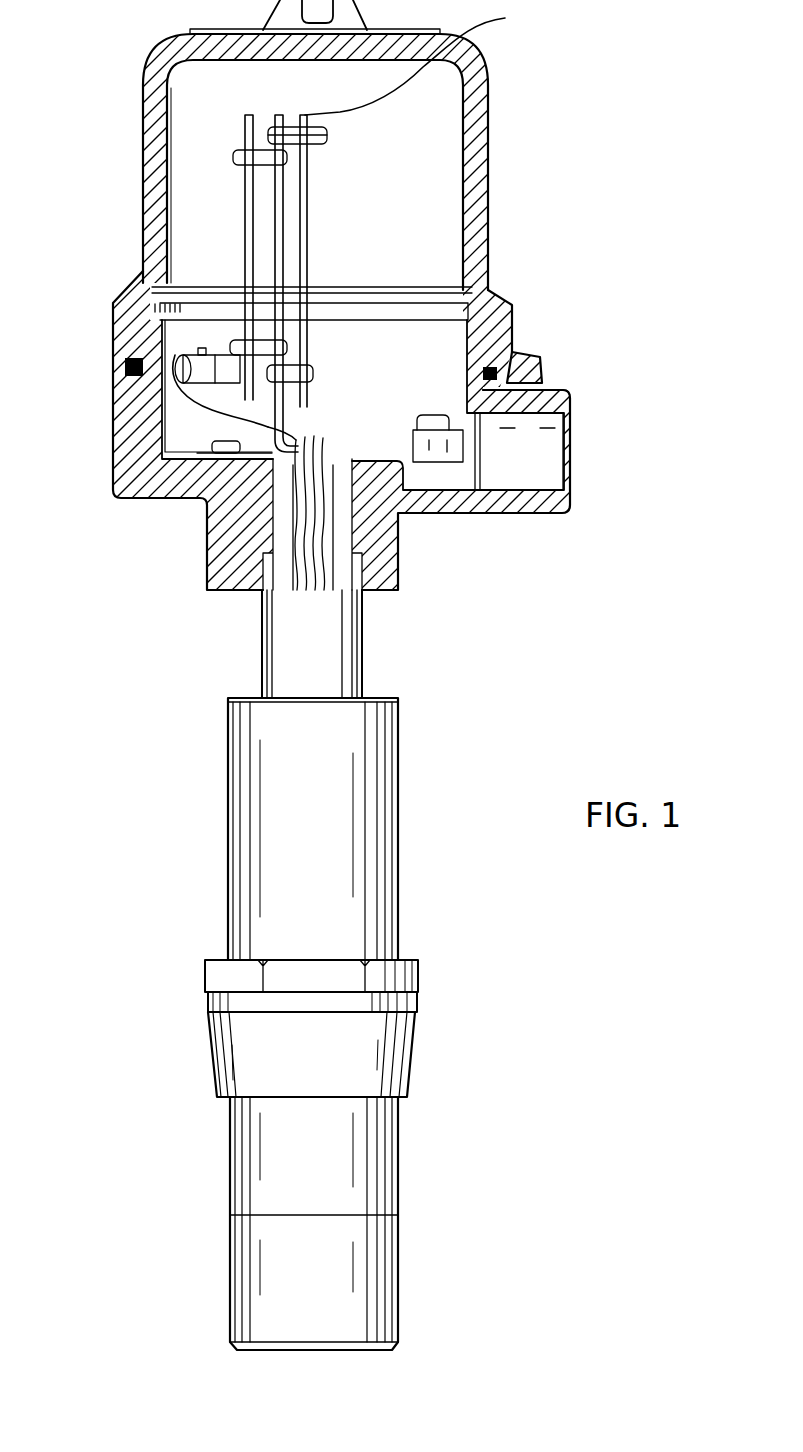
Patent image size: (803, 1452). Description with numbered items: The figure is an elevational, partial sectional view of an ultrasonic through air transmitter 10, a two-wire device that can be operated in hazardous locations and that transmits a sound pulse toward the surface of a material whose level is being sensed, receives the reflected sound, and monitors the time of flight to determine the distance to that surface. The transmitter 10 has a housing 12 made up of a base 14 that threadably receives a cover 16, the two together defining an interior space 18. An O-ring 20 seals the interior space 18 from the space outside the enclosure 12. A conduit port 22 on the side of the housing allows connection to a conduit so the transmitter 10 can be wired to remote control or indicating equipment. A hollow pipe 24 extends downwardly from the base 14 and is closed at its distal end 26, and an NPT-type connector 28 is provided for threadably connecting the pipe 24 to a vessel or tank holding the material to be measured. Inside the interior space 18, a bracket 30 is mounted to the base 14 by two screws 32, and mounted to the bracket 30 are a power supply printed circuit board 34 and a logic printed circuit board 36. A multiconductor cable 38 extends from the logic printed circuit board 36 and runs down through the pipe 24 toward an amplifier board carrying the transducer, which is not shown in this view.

The ultrasonic through air transmitter 10 is at (562, 582).
The housing 12 is at (557, 320).
The base 14 is at (573, 397).
The cover 16 is at (480, 200).
The interior space 18 is at (405, 211).
The O-ring 20 is at (490, 378).
The conduit port 22 is at (542, 490).
The hollow pipe 24 is at (340, 642).
The distal end 26 is at (367, 1345).
The NPT-type connector 28 is at (428, 1047).
The bracket 30 is at (282, 113).
The screws 32 is at (262, 425).
The power supply printed circuit board 34 is at (505, 18).
The logic printed circuit board 36 is at (243, 127).
The multiconductor cable 38 is at (317, 447).